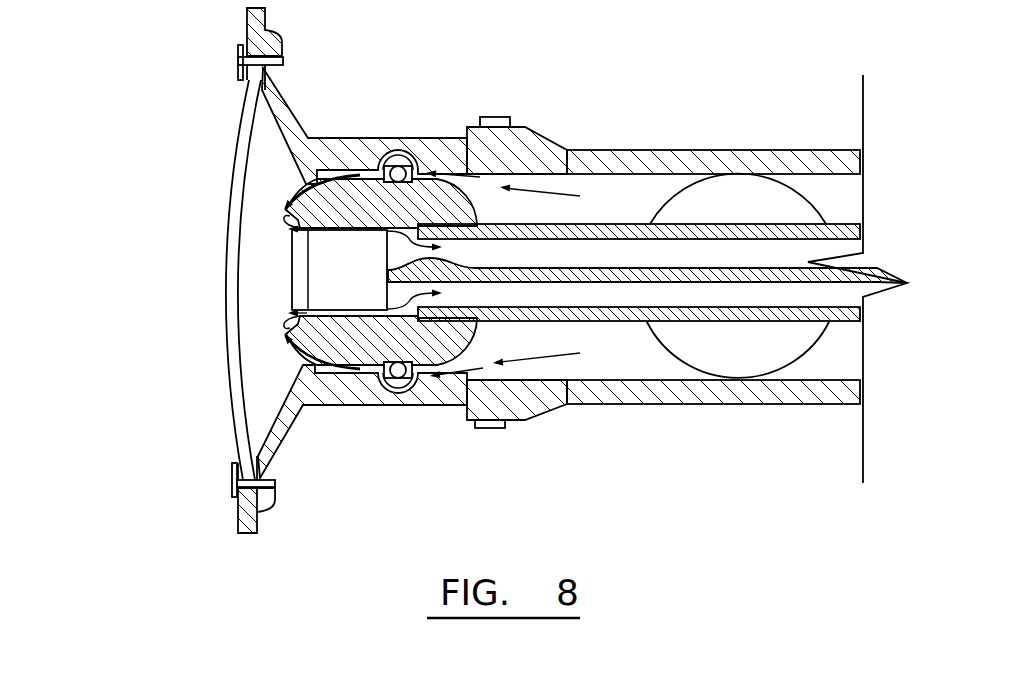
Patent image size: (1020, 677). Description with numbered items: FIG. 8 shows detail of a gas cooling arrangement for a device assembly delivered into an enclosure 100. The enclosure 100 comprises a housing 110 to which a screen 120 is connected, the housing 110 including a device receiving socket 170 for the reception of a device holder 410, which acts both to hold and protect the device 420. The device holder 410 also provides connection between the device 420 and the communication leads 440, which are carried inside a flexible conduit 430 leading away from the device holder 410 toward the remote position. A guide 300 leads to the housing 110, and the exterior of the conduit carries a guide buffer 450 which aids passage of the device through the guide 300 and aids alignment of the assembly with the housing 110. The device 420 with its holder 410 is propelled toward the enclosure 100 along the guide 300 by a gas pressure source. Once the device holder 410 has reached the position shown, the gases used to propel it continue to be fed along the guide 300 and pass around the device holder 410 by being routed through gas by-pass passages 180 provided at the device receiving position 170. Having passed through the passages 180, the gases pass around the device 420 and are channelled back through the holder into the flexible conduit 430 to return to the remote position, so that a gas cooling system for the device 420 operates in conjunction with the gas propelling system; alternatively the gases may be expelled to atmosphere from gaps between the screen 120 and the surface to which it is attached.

The enclosure 100 is at (210, 300).
The housing 110 is at (292, 117).
The screen 120 is at (230, 378).
The device receiving socket 170 is at (440, 147).
The gas by-pass passage 180 is at (385, 395).
The guide 300 is at (633, 149).
The device holder 410 is at (480, 182).
The device 420 is at (343, 272).
The flexible conduit 430 is at (678, 282).
The communication leads 440 is at (597, 326).
The guide buffer 450 is at (744, 177).